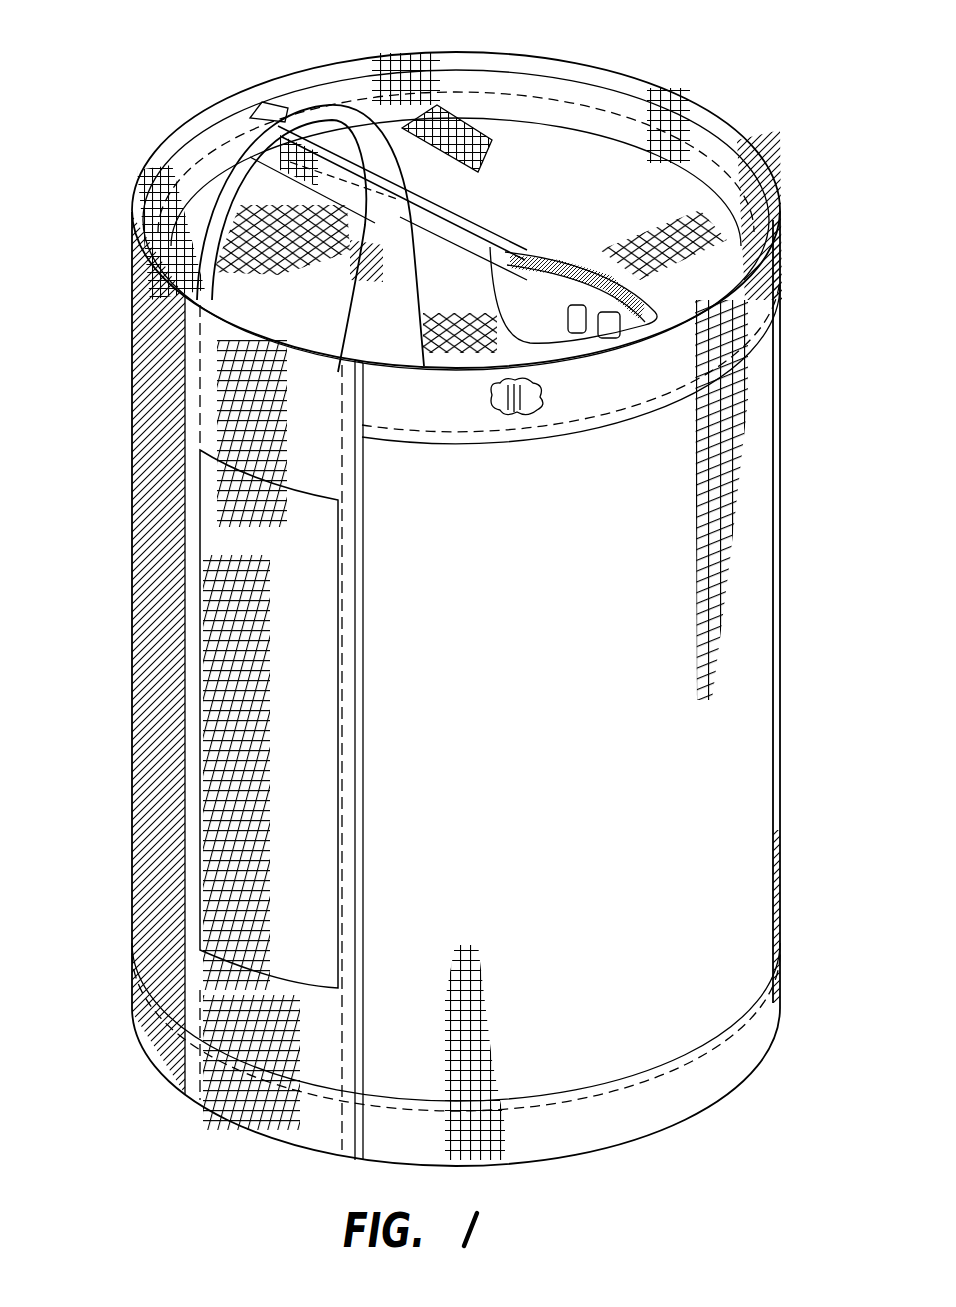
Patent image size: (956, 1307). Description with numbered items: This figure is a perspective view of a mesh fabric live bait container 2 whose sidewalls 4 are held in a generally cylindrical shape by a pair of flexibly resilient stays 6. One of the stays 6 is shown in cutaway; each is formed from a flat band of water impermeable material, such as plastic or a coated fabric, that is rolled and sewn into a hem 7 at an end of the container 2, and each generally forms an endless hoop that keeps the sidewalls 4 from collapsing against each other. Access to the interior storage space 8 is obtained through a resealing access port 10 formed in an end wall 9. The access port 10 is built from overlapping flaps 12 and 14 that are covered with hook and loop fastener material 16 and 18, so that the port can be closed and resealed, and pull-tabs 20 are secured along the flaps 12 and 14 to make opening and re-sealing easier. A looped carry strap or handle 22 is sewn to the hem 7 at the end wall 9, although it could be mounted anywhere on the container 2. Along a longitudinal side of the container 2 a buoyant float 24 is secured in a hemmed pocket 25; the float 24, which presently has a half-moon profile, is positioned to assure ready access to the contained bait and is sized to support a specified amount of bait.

The live bait container 2 is at (218, 44).
The sidewalls 4 is at (782, 488).
The stays 6 is at (522, 405).
The hem 7 is at (439, 418).
The interior storage space 8 is at (550, 297).
The end wall 9 is at (595, 150).
The access port 10 is at (538, 231).
The flap 12 is at (333, 188).
The flap 14 is at (613, 306).
The hook and loop fastener material 16 is at (575, 318).
The hook and loop fastener material 18 is at (605, 335).
The pull-tabs 20 is at (473, 130).
The carry strap or handle 22 is at (243, 137).
The buoyant float 24 is at (282, 614).
The hemmed pocket 25 is at (680, 1103).